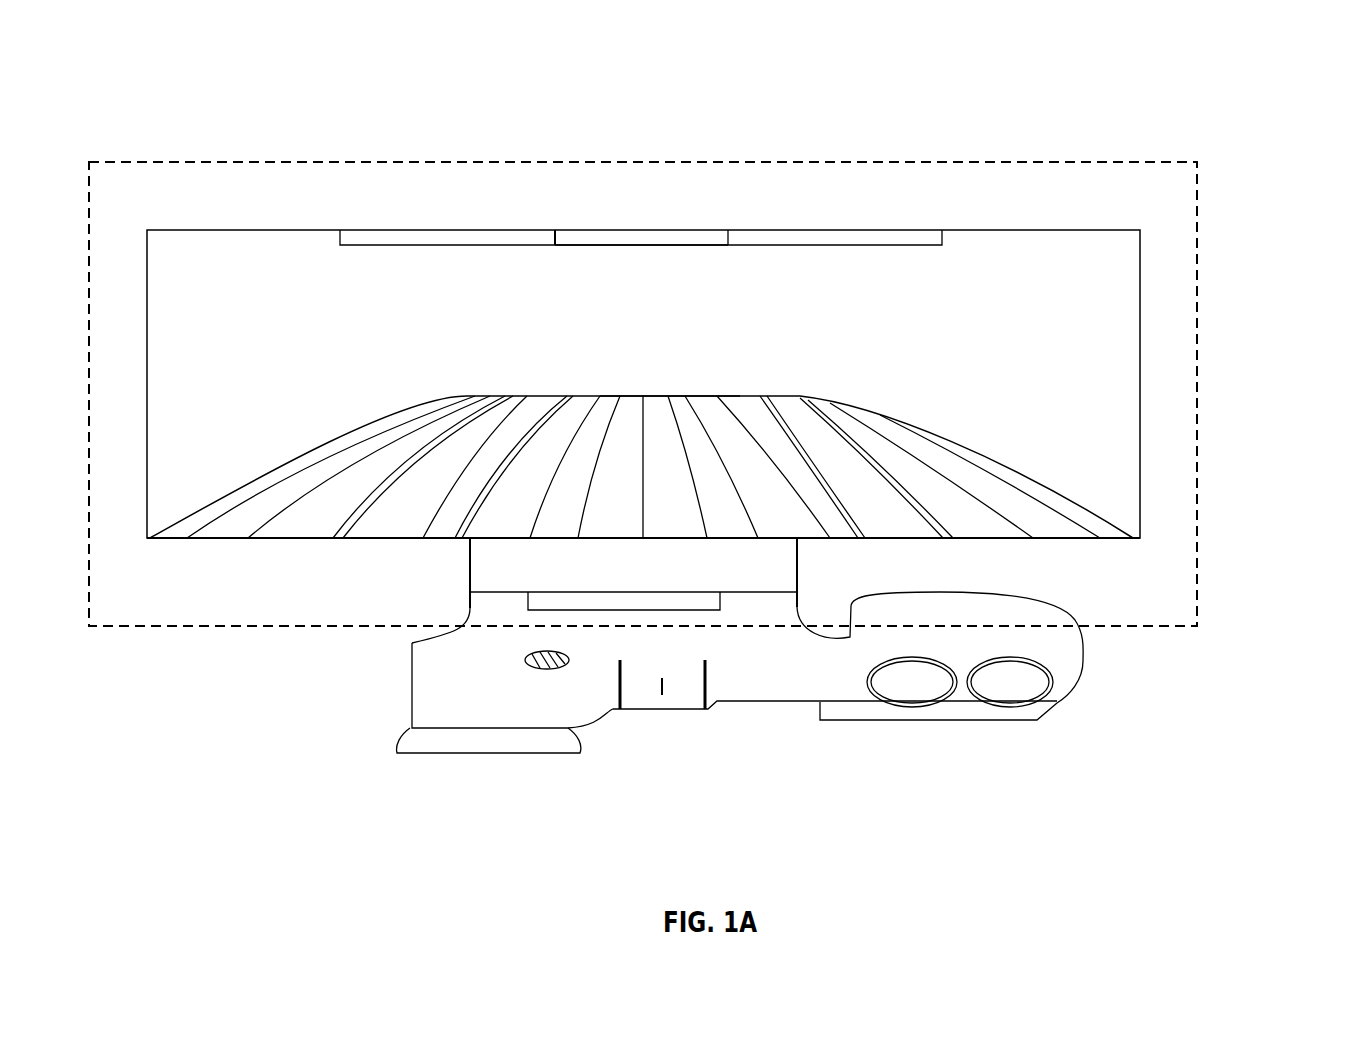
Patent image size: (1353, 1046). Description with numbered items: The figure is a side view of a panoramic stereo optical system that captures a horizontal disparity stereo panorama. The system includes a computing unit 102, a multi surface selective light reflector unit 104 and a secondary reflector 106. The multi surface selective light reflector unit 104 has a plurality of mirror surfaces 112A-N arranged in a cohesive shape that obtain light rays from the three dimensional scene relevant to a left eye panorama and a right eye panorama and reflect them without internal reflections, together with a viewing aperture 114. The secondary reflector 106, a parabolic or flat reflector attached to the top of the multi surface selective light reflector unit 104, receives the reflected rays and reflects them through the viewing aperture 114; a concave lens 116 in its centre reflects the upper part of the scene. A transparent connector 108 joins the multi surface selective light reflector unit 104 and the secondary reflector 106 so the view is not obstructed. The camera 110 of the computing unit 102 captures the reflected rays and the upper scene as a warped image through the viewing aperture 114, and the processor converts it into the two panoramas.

The computing unit 102 is at (1083, 661).
The multi surface selective light reflector unit 104 is at (908, 418).
The secondary reflector 106 is at (910, 232).
The connector 108 is at (1140, 246).
The camera 110 is at (703, 603).
The mirror surfaces 112A-N is at (775, 491).
The viewing aperture 114 is at (672, 396).
The concave lens 116 is at (568, 233).